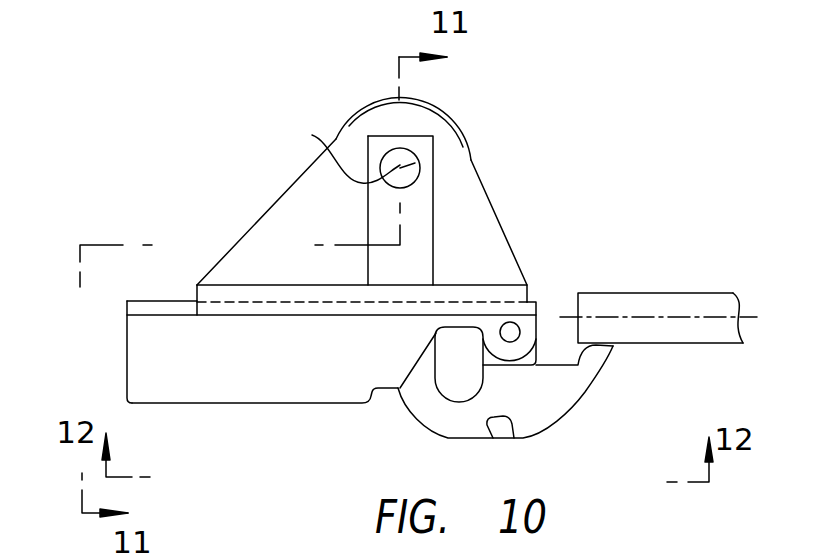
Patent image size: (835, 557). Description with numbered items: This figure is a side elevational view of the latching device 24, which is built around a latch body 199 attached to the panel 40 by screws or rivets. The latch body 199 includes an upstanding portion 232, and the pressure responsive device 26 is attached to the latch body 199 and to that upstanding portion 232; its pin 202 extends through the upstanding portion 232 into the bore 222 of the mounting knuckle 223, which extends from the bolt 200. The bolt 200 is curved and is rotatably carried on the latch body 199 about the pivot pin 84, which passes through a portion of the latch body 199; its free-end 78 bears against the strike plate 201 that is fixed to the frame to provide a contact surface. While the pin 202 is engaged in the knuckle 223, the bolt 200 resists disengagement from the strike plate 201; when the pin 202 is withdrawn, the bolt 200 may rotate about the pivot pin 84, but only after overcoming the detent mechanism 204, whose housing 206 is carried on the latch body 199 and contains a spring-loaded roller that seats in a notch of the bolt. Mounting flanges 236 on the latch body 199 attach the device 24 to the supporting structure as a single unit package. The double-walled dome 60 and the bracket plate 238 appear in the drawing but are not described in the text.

The latching device 24 is at (227, 133).
The pressure responsive device 26 is at (337, 108).
The dome wall 60 is at (437, 107).
The bore 222 is at (332, 152).
The pin 202 is at (400, 168).
The upstanding portion 232 is at (299, 182).
The mounting knuckle 223 is at (422, 211).
The bolt 200 is at (357, 230).
The latch body 199 is at (210, 227).
The mounting flanges 236 is at (199, 295).
The pivot pin 84 is at (510, 332).
The bracket plate 238 is at (530, 333).
The panel 40 is at (675, 292).
The strike plate 201 is at (707, 305).
The free-end 78 is at (615, 347).
The housing 206 is at (163, 401).
The detent mechanism 204 is at (268, 425).